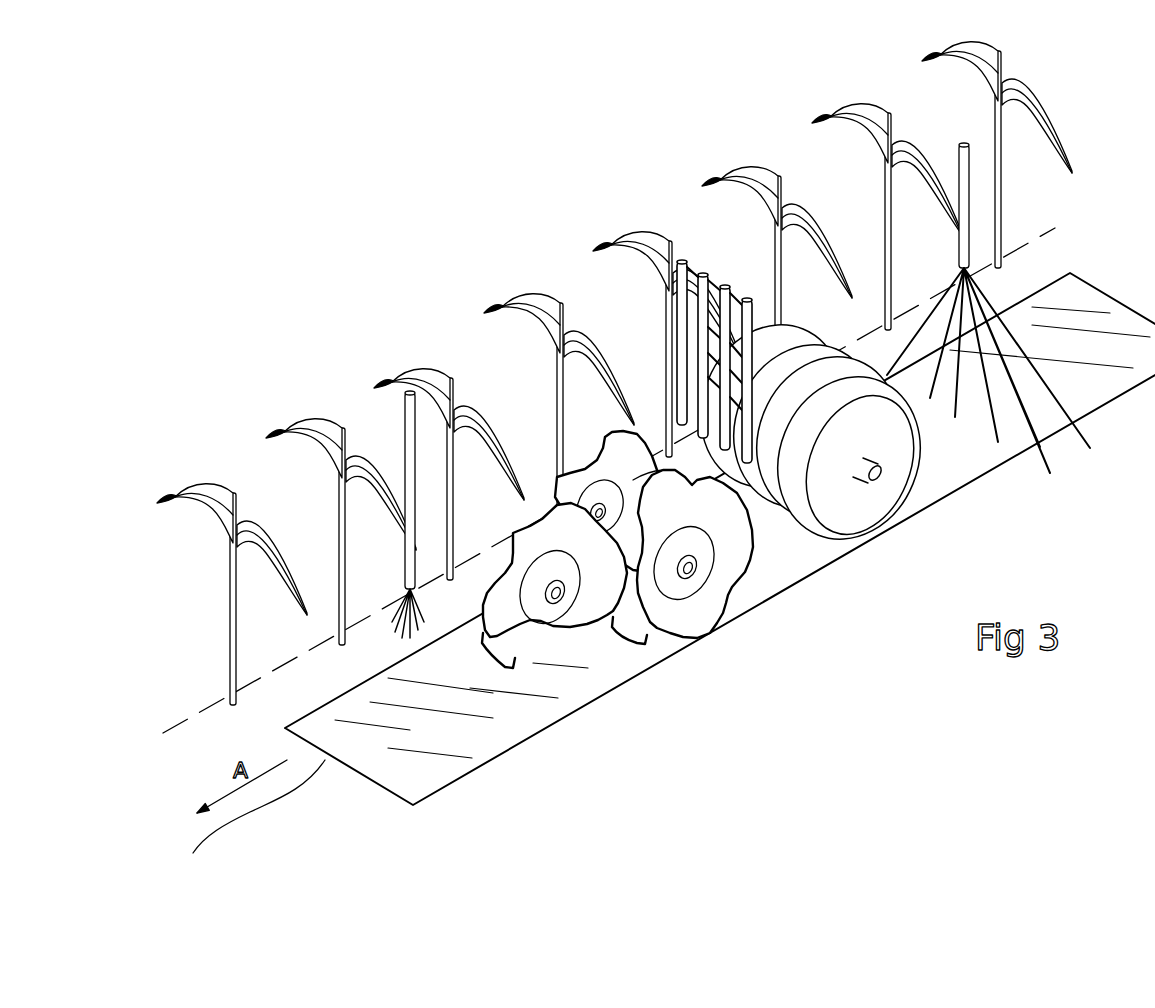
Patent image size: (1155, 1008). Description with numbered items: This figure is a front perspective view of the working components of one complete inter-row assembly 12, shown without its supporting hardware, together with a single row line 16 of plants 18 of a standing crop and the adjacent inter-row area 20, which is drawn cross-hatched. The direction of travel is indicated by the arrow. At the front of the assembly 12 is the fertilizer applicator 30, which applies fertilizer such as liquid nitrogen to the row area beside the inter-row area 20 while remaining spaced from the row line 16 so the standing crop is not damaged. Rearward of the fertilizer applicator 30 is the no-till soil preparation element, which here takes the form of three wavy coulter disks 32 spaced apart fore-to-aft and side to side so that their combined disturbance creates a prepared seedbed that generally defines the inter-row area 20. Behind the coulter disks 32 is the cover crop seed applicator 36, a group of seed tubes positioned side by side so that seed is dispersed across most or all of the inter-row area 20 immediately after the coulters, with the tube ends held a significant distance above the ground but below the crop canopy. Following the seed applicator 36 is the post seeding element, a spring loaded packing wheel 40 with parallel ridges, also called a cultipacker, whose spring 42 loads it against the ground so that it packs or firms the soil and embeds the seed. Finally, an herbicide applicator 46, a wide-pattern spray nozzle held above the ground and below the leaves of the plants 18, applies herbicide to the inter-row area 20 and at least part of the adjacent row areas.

The inter-row assembly 12 is at (535, 747).
The row line 16 is at (193, 717).
The plants 18 is at (230, 587).
The inter-row area 20 is at (430, 740).
The fertilizer applicator 30 is at (405, 442).
The coulter disks 32 is at (552, 627).
The cover crop seed applicator 36 is at (703, 262).
The packing wheel 40 is at (880, 493).
The spring 42 is at (975, 460).
The herbicide applicator 46 is at (968, 212).